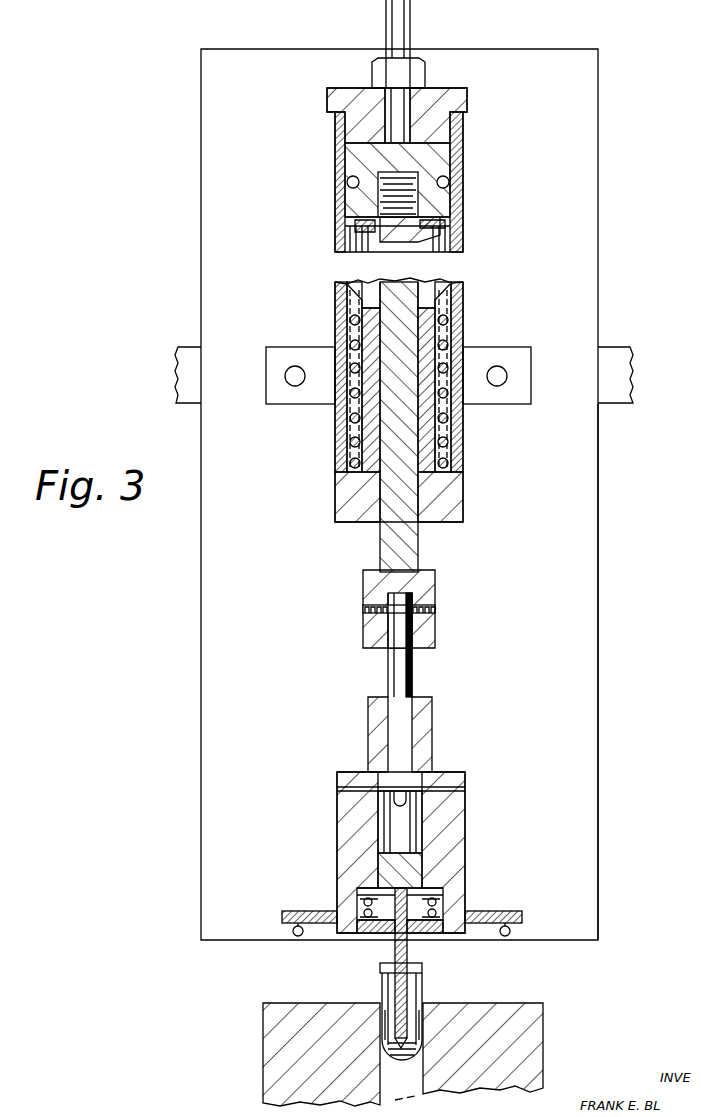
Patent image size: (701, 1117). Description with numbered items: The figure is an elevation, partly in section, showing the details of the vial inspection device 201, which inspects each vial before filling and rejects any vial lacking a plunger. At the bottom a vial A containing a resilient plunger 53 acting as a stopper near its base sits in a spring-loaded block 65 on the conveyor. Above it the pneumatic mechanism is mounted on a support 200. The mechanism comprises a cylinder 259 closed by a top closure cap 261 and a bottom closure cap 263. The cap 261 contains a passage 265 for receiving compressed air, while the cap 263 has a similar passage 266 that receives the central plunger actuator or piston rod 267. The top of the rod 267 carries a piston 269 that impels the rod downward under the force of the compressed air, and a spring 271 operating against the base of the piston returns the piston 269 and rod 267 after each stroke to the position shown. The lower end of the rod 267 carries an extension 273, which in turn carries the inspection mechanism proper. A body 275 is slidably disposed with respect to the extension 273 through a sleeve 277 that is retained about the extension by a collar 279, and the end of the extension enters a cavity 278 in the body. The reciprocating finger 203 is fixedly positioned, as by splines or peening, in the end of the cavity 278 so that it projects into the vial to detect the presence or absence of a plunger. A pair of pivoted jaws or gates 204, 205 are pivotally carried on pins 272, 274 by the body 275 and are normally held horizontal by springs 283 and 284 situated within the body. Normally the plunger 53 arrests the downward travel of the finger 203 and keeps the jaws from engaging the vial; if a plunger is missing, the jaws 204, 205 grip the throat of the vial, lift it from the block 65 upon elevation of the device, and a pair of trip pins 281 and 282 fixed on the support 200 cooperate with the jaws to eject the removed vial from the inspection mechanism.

The support 200 is at (600, 667).
The vial inspection device 201 is at (605, 467).
The reciprocating finger 203 is at (408, 949).
The pivoted jaw 204 is at (292, 912).
The pivoted jaw 205 is at (455, 917).
The cylinder 259 is at (457, 232).
The top closure cap 261 is at (437, 90).
The bottom closure cap 263 is at (465, 510).
The passage 265 is at (387, 97).
The passage 266 is at (380, 522).
The piston rod 267 is at (416, 545).
The piston 269 is at (440, 152).
The spring 271 is at (340, 296).
The pin 272 is at (350, 920).
The extension 273 is at (415, 675).
The pin 274 is at (487, 910).
The body 275 is at (467, 787).
The sleeve 277 is at (432, 737).
The cavity 278 is at (407, 822).
The collar 279 is at (383, 787).
The trip pin 281 is at (300, 936).
The trip pin 282 is at (507, 936).
The spring 283 is at (367, 893).
The spring 284 is at (440, 888).
The resilient plunger 53 is at (412, 1038).
The vial A is at (422, 1016).
The spring-loaded block 65 is at (543, 1030).